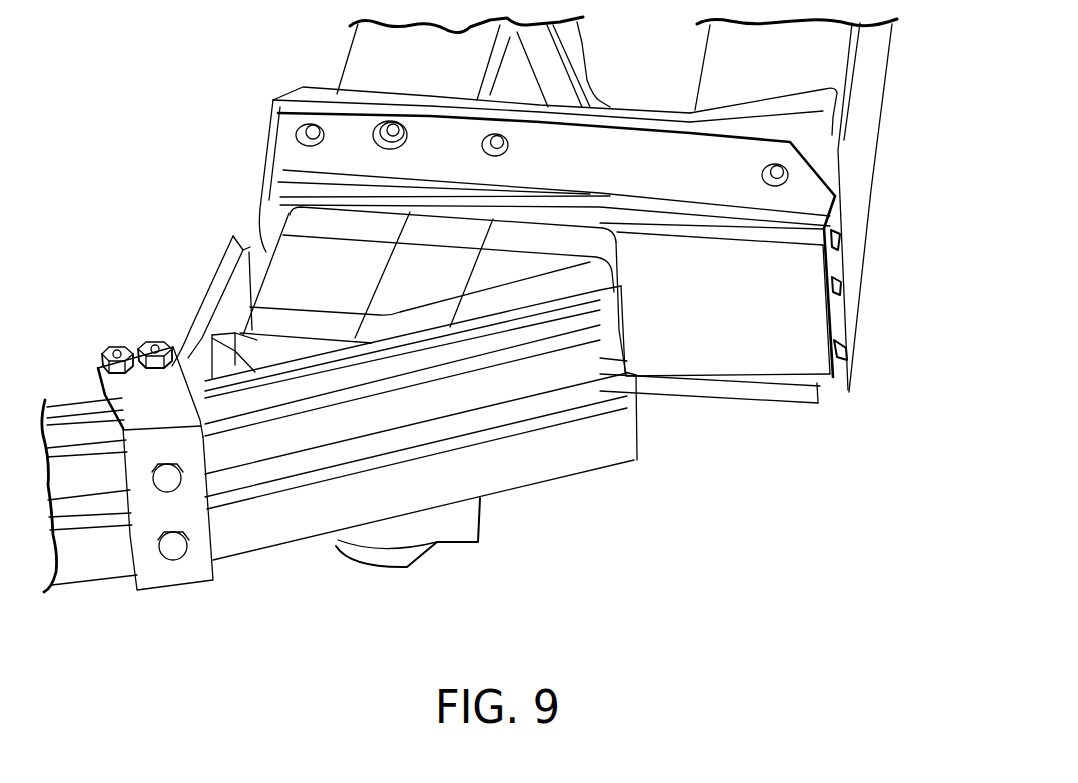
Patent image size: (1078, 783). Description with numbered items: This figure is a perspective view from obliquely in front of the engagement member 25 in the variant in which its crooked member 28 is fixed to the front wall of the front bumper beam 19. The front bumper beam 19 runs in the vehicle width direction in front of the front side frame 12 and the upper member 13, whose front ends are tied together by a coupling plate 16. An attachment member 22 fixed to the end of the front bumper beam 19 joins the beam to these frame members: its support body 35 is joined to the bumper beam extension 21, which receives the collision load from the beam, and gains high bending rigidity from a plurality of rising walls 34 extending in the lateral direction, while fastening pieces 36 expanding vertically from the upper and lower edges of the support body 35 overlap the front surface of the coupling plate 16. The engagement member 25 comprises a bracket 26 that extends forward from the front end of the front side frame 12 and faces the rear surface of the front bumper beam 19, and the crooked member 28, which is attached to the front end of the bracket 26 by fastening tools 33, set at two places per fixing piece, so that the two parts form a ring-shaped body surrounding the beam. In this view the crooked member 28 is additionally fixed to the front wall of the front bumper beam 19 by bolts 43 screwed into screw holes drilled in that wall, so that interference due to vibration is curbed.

The front side frame 12 is at (385, 50).
The upper member 13 is at (882, 55).
The coupling plate 16 is at (822, 112).
The front bumper beam 19 is at (557, 480).
The bumper beam extension 21 is at (310, 262).
The attachment member 22 is at (842, 262).
The engagement member 25 is at (92, 383).
The bracket 26 is at (222, 263).
The crooked member 28 is at (174, 590).
The fastening tool 33 is at (115, 348).
The rising wall 34 is at (834, 221).
The support body 35 is at (803, 331).
The fastening piece 36 is at (613, 148).
The bolt 43 is at (183, 480).